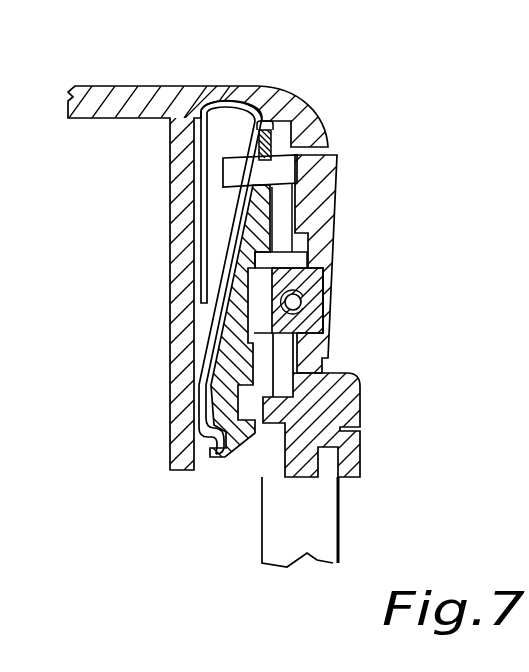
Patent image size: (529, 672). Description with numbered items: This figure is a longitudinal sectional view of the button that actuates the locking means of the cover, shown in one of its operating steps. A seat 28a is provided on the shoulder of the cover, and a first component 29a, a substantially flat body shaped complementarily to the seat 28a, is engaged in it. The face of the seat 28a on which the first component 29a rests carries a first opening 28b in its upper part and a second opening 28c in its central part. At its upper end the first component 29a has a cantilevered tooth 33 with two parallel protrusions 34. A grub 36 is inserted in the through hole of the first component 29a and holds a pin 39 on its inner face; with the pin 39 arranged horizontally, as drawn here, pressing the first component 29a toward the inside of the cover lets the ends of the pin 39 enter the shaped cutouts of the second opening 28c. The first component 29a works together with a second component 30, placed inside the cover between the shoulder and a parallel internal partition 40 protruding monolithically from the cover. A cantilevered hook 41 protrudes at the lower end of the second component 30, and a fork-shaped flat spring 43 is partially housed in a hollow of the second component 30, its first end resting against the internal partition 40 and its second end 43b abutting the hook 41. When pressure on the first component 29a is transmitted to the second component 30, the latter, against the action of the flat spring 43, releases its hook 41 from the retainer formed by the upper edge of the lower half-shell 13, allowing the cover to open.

The lower half-shell 13 is at (335, 530).
The seat 28a is at (326, 154).
The first opening 28b is at (300, 152).
The second opening 28c is at (293, 310).
The first component 29a is at (328, 205).
The second component 30 is at (220, 250).
The cantilevered tooth 33 is at (266, 118).
The parallel protrusions 34 is at (196, 118).
The grub 36 is at (320, 321).
The pin 39 is at (300, 321).
The internal partition 40 is at (200, 400).
The cantilevered hook 41 is at (252, 437).
The fork-shaped flat spring 43 is at (223, 312).
The second end 43b is at (214, 445).